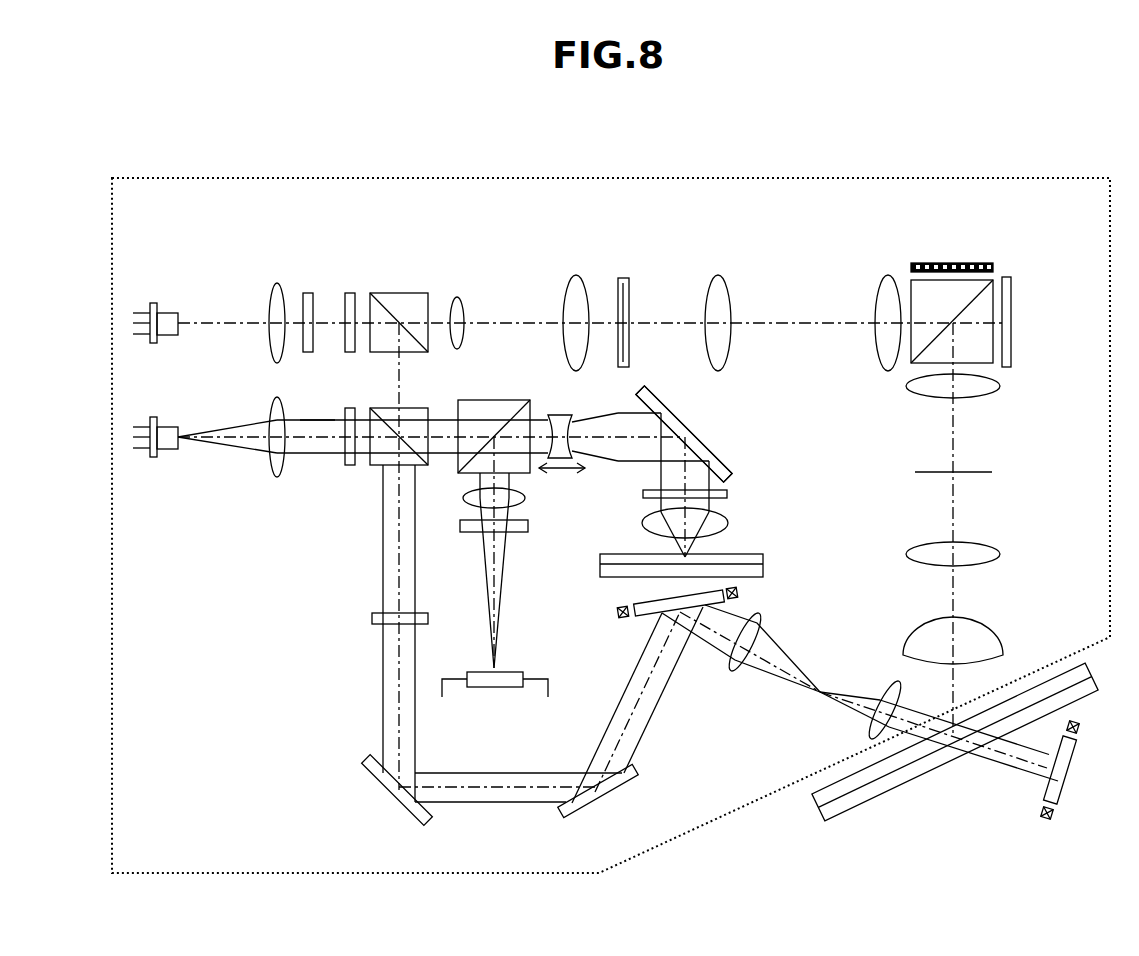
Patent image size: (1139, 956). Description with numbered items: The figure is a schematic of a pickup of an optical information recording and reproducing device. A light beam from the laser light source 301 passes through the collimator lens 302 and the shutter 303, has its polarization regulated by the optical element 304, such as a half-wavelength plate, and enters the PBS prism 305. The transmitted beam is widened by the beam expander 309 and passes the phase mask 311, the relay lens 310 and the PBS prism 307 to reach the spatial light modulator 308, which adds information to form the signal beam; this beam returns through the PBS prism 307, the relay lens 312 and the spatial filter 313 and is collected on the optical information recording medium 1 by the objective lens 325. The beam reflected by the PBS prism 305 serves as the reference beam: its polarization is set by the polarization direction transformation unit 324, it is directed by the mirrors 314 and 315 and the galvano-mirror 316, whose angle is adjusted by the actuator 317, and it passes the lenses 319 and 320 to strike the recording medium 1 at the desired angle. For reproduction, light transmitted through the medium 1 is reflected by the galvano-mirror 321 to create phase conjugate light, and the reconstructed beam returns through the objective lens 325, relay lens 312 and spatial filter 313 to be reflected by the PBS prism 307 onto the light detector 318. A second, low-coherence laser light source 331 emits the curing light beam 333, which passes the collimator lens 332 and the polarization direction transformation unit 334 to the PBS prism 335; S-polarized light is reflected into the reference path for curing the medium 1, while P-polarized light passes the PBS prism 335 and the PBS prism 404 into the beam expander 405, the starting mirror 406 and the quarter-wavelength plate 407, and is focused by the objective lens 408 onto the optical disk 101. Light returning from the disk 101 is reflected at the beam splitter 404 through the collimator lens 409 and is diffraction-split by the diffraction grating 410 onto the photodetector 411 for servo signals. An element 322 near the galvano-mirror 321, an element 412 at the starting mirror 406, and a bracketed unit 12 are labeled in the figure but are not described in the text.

The laser light source 301 is at (166, 312).
The collimator lens 302 is at (273, 283).
The shutter 303 is at (308, 292).
The optical element 304 is at (348, 293).
The PBS prism 305 is at (408, 302).
The PBS prism 307 is at (925, 298).
The spatial light modulator 308 is at (960, 263).
The beam expander 309 is at (572, 262).
The relay lens 310 is at (877, 262).
The phase mask 311 is at (625, 277).
The relay lens 312 is at (893, 392).
The spatial filter 313 is at (993, 472).
The mirror 314 is at (388, 803).
The mirror 315 is at (593, 798).
The galvano-mirror 316 is at (643, 615).
The actuator 317 is at (617, 609).
The light detector 318 is at (1011, 330).
The lens 319 is at (737, 668).
The lens 320 is at (883, 684).
The galvano-mirror 321 is at (1067, 774).
The actuator of 321 322 is at (1042, 820).
The polarization direction transformation unit 324 is at (373, 615).
The objective lens 325 is at (997, 650).
The laser light source 331 is at (166, 426).
The collimator lens 332 is at (275, 398).
The curing light beam 333 is at (317, 422).
The polarization direction transformation unit 334 is at (348, 408).
The PBS prism 335 is at (408, 413).
The PBS prism 404 is at (470, 417).
The beam expander 405 is at (633, 480).
The starting mirror 406 is at (697, 440).
The quarter wavelength plate 407 is at (727, 497).
The objective lens 408 is at (715, 522).
The collimator lens 409 is at (465, 503).
The diffraction grating 410 is at (470, 532).
The photodetector 411 is at (482, 682).
The reflecting surface 412 is at (698, 472).
The optical disk 101 is at (752, 566).
The optical information recording medium 1 is at (837, 820).
The scanning unit 12 is at (1091, 858).